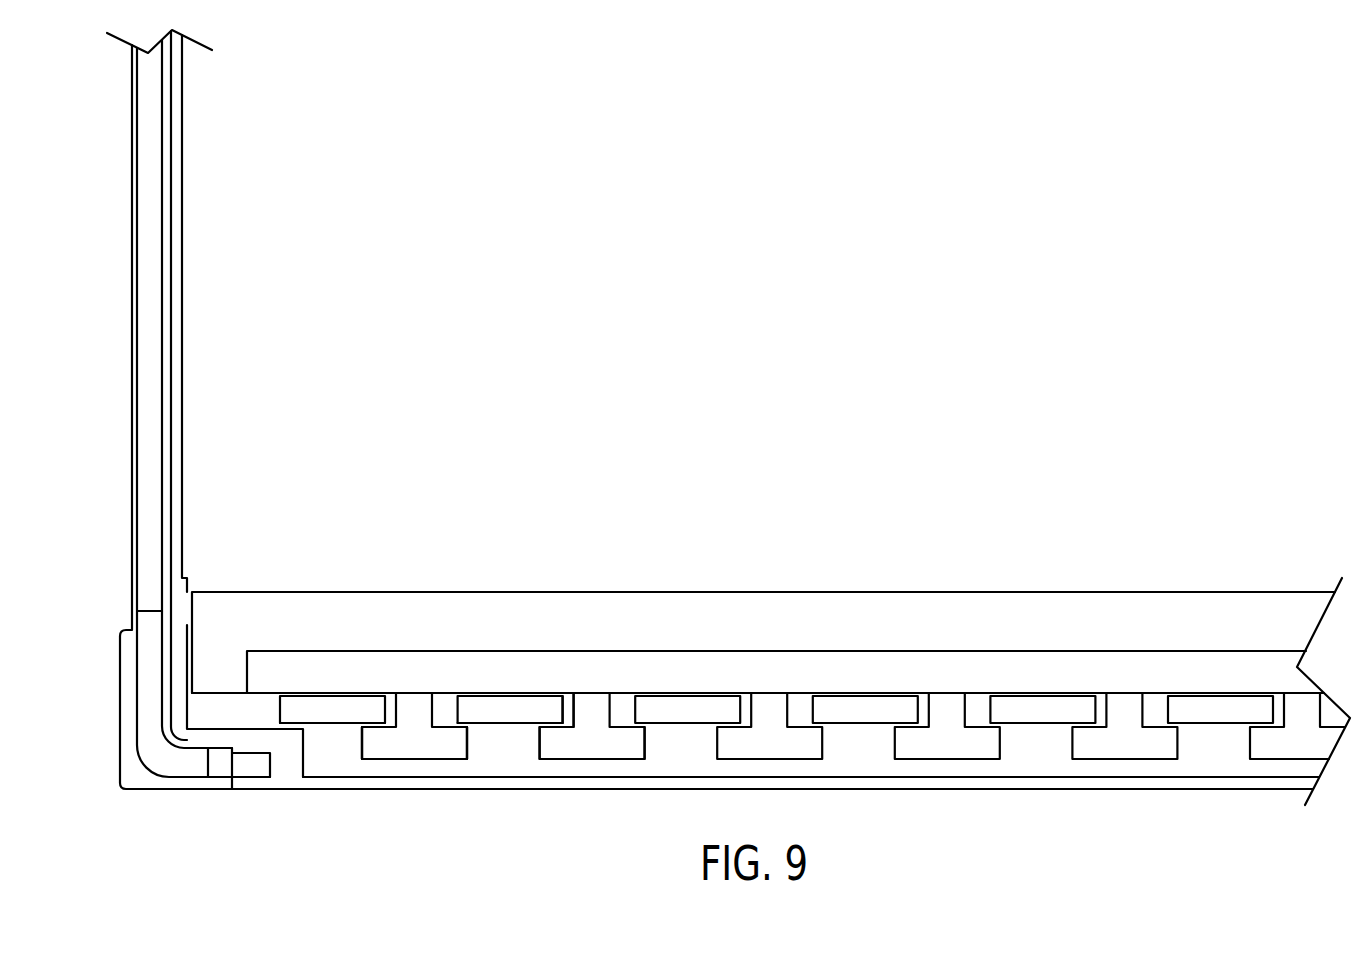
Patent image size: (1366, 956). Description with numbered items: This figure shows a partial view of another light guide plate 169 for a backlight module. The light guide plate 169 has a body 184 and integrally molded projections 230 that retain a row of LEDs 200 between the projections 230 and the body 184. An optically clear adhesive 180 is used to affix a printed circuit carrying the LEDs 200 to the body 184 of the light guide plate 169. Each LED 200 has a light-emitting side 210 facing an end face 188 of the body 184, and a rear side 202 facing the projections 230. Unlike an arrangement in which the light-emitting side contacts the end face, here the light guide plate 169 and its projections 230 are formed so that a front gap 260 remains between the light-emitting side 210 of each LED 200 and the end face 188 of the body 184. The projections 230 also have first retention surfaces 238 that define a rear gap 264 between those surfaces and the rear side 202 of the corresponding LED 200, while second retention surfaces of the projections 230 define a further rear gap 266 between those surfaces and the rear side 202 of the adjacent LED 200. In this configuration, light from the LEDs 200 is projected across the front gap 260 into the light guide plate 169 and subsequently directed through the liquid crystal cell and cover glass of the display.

The light guide plate 169 is at (180, 607).
The optically clear adhesive 180 is at (443, 663).
The body 184 is at (197, 647).
The end face 188 is at (238, 693).
The LED 200 is at (322, 710).
The rear side 202 is at (326, 728).
The light-emitting side 210 is at (292, 693).
The projections 230 is at (410, 743).
The first retention surfaces 238 is at (571, 722).
The front gap 260 is at (262, 691).
The rear gap 264 is at (350, 738).
The rear gap 266 is at (482, 736).